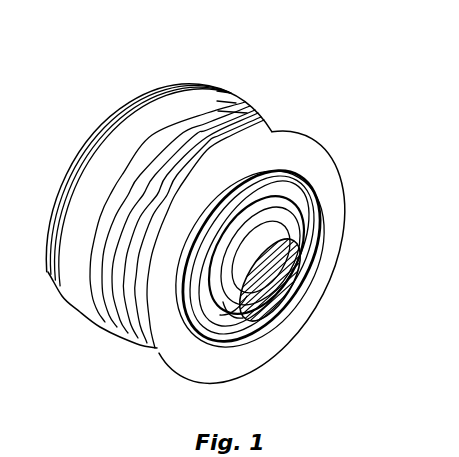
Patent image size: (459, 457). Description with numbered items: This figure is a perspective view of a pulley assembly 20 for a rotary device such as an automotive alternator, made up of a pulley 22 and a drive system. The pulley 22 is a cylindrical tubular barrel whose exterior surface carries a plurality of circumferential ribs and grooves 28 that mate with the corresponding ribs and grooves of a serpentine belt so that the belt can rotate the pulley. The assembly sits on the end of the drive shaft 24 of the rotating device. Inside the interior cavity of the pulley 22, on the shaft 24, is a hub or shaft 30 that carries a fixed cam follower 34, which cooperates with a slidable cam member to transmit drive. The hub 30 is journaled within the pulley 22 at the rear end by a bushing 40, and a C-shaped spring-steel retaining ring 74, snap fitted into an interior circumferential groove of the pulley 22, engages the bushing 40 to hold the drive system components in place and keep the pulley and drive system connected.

The pulley assembly 20 is at (63, 122).
The pulley 22 is at (297, 156).
The drive shaft 24 is at (298, 233).
The circumferential ribs and grooves 28 is at (213, 112).
The hub or shaft 30 is at (262, 322).
The cam follower 34 is at (225, 318).
The bushing 40 is at (294, 200).
The retaining ring 74 is at (257, 307).